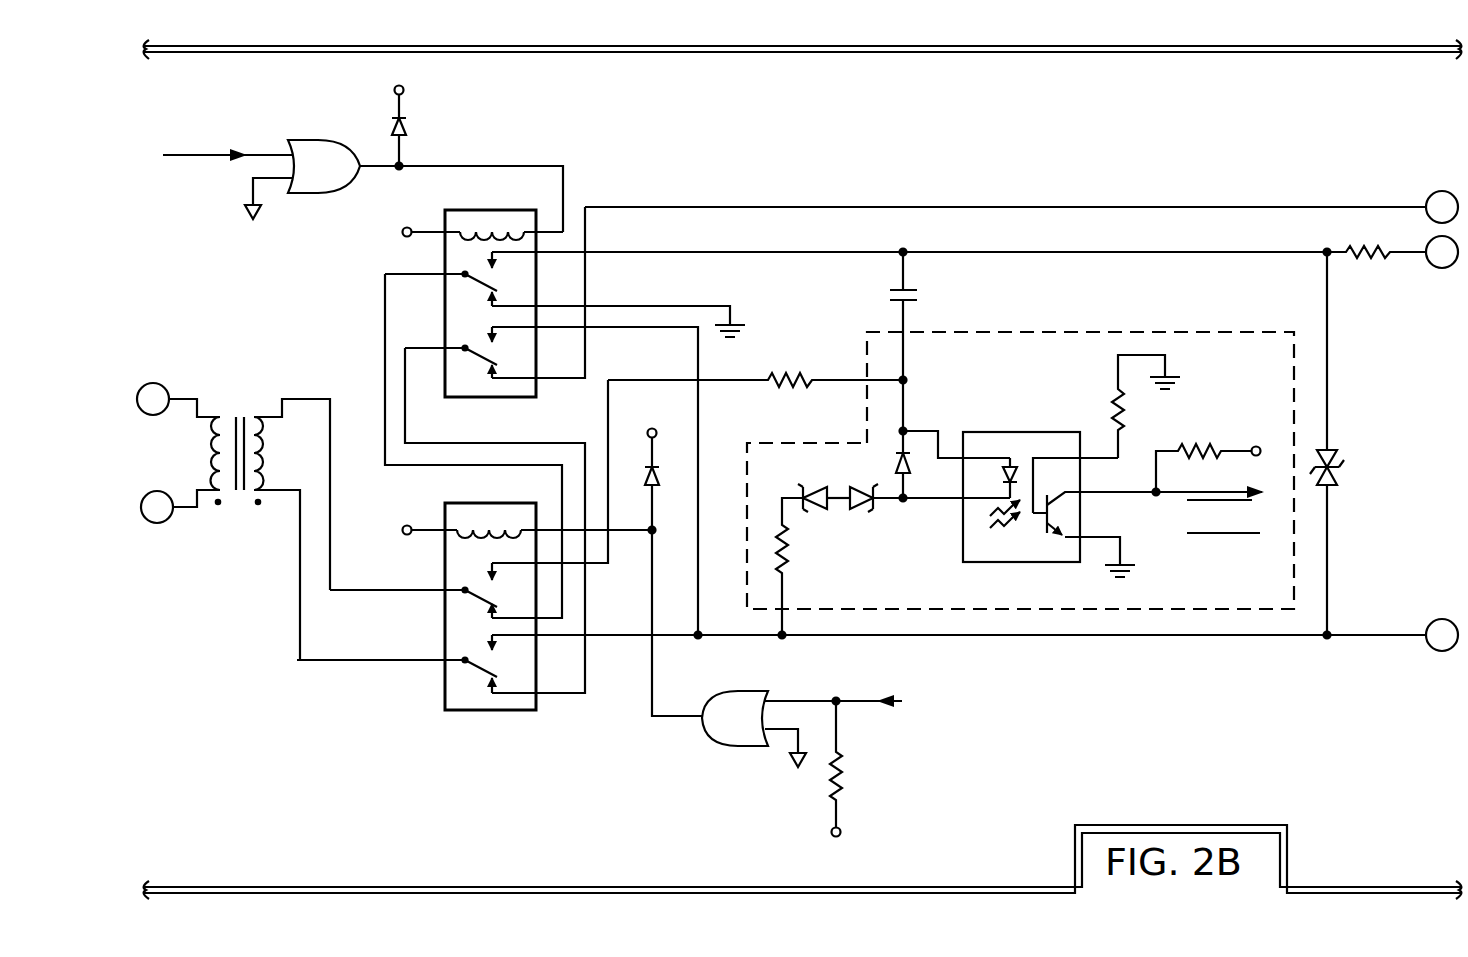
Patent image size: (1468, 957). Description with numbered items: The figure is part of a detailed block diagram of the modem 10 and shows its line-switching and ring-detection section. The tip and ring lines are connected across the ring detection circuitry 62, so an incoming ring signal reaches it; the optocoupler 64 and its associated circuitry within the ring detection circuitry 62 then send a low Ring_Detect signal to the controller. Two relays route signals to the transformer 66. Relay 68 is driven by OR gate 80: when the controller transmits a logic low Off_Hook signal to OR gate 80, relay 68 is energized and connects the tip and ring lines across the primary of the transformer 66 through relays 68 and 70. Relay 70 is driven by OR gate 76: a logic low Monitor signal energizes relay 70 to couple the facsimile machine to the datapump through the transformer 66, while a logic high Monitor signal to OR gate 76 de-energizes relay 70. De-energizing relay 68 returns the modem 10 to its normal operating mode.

The modem 10 is at (935, 123).
The ring detection circuitry 62 is at (1020, 332).
The optocoupler 64 is at (1015, 431).
The transformer 66 is at (247, 390).
The relay 68 is at (486, 397).
The relay 70 is at (445, 690).
The OR gate 76 is at (752, 691).
The OR gate 80 is at (313, 140).